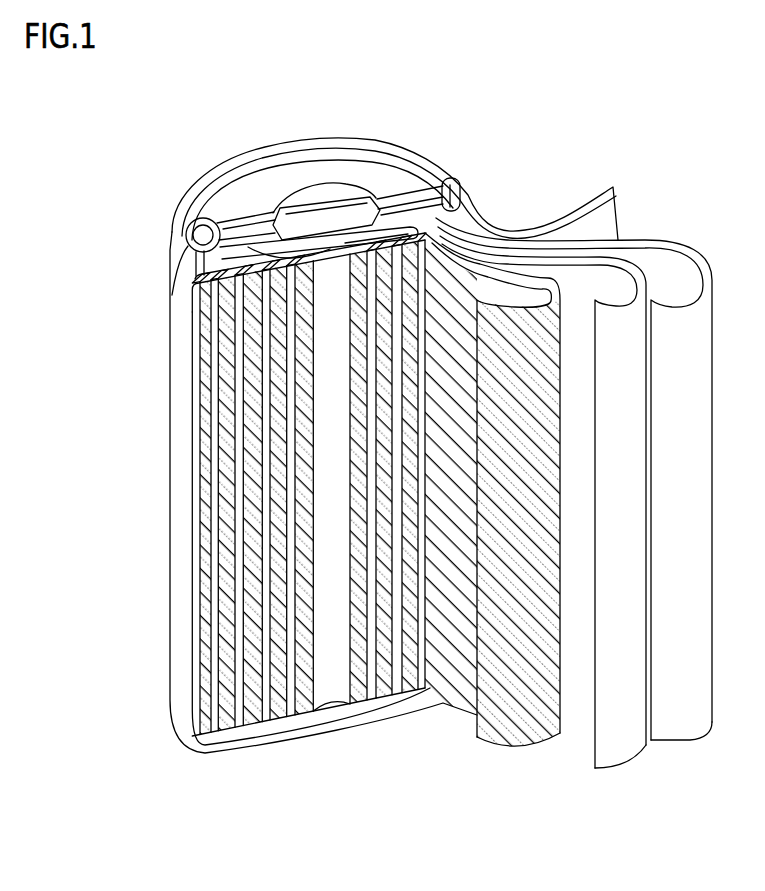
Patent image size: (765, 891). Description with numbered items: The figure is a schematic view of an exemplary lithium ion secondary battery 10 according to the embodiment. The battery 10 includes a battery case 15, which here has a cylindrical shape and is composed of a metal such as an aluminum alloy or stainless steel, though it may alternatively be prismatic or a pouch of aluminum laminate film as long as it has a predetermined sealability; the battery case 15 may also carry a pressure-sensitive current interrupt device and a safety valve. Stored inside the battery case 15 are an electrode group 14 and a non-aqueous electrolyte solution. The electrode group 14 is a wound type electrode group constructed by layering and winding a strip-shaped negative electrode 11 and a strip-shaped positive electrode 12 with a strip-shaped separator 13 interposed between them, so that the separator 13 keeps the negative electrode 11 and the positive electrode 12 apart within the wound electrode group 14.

The battery 10 is at (697, 110).
The negative electrode 11 is at (690, 712).
The positive electrode 12 is at (518, 717).
The separator 13 is at (607, 735).
The electrode group 14 is at (717, 812).
The battery case 15 is at (180, 344).